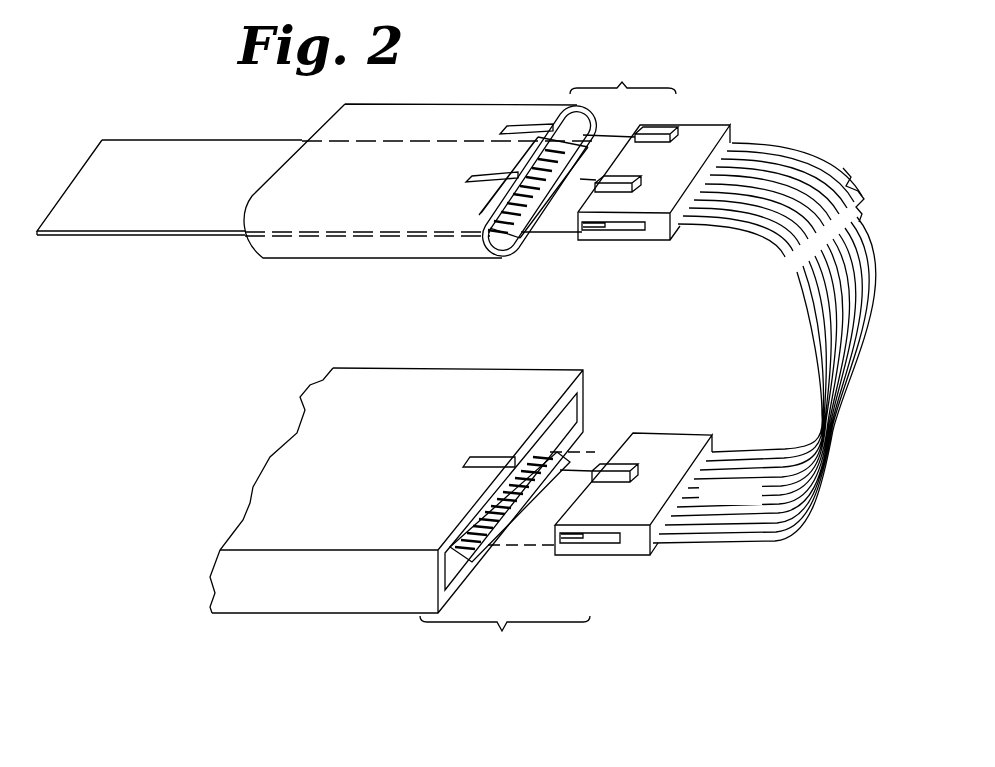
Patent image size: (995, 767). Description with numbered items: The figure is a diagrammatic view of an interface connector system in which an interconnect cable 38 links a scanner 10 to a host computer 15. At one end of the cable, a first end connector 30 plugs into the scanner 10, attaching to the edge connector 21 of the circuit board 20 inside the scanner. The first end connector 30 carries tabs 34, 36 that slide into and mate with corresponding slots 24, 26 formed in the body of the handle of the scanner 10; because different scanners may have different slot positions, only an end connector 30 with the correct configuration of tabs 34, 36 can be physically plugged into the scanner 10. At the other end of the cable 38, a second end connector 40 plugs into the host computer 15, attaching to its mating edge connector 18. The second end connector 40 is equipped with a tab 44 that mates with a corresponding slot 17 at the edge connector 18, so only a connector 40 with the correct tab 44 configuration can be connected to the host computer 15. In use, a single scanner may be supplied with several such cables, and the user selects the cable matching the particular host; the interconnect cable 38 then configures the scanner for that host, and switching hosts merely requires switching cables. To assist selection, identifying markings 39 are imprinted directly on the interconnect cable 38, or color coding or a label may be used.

The scanner 10 is at (440, 118).
The host computer 15 is at (312, 580).
The slot 17 is at (483, 457).
The edge connector 18 is at (467, 550).
The circuit board 20 is at (513, 246).
The edge connector 21 is at (570, 142).
The slot 24 is at (473, 176).
The slot 26 is at (507, 125).
The first end connector 30 is at (712, 122).
The tab 34 is at (632, 175).
The tab 36 is at (670, 128).
The interconnect cable 38 is at (787, 158).
The identifying markings 39 is at (732, 505).
The second end connector 40 is at (675, 433).
The tab 44 is at (632, 469).